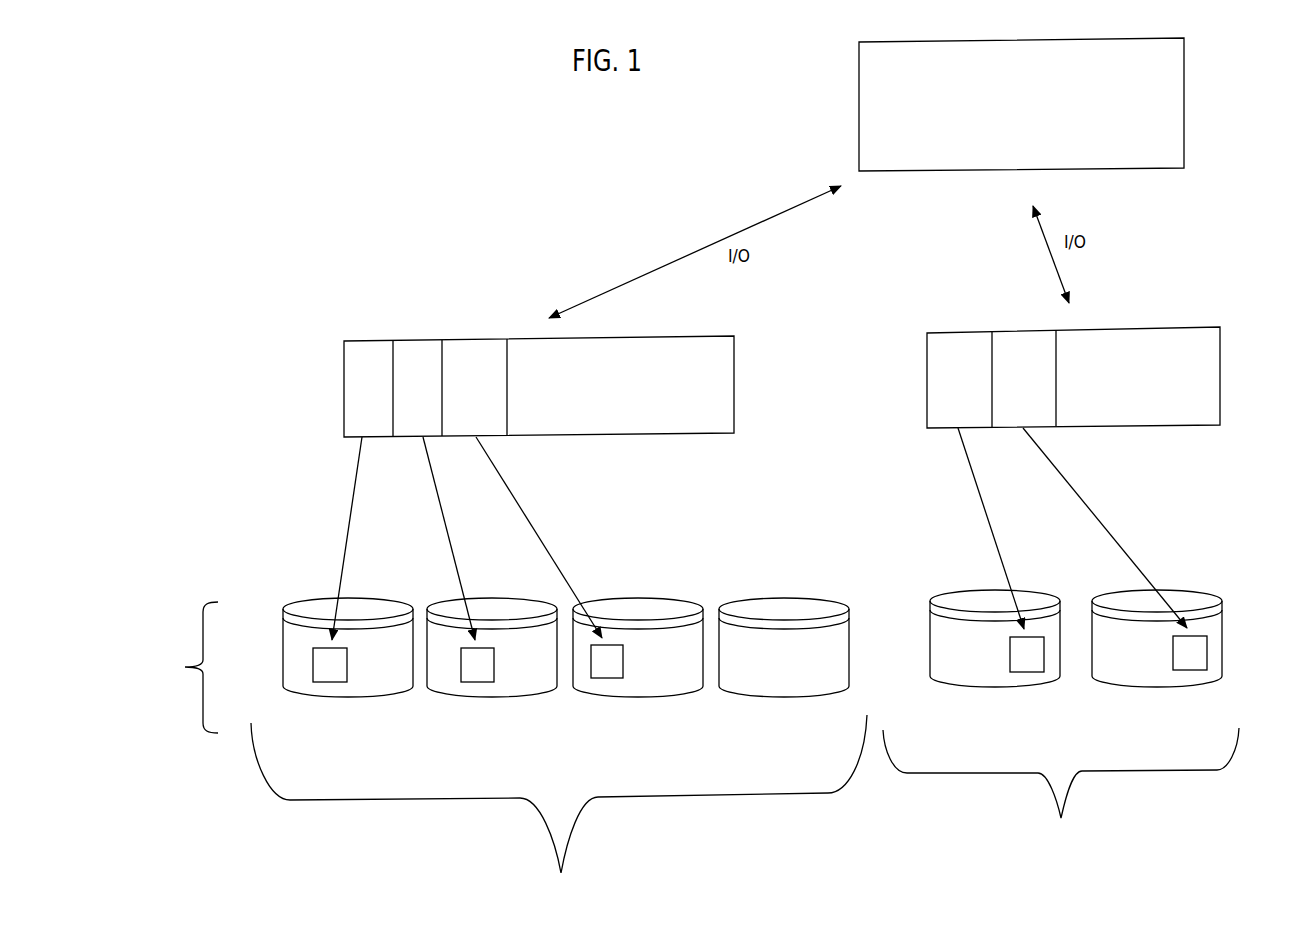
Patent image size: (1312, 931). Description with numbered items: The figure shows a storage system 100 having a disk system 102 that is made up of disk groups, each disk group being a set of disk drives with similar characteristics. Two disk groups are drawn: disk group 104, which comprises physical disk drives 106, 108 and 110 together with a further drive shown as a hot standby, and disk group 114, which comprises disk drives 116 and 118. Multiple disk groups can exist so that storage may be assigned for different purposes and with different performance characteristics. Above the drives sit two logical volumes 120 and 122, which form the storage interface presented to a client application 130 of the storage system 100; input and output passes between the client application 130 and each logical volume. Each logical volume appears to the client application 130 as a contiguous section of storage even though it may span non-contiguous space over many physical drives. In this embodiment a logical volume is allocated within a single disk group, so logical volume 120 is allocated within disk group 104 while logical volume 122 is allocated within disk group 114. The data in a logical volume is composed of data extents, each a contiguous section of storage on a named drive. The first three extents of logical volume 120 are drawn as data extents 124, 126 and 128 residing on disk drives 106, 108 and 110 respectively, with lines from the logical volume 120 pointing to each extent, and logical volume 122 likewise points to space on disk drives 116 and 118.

The storage system 100 is at (430, 208).
The disk system 102 is at (172, 667).
The disk group 104 is at (559, 809).
The physical disk drive 106 is at (336, 697).
The physical disk drive 108 is at (482, 697).
The physical disk drive 110 is at (636, 697).
The disk group 114 is at (782, 697).
The disk drive 116 is at (995, 687).
The disk drive 118 is at (1157, 687).
The logical volume 120 is at (734, 385).
The logical volume 122 is at (1220, 377).
The data extent 124 is at (347, 663).
The data extent 126 is at (494, 662).
The data extent 128 is at (623, 659).
The client application 130 is at (1184, 102).